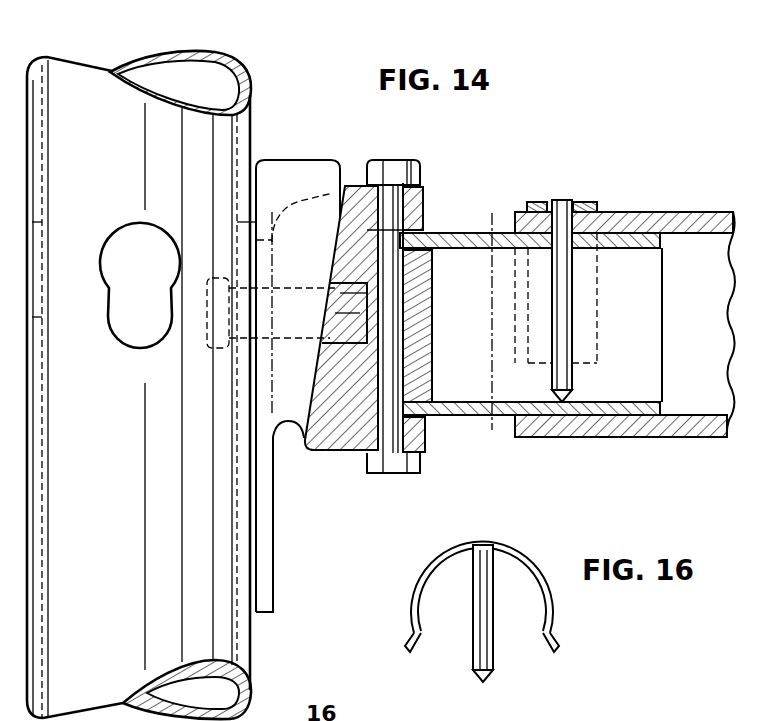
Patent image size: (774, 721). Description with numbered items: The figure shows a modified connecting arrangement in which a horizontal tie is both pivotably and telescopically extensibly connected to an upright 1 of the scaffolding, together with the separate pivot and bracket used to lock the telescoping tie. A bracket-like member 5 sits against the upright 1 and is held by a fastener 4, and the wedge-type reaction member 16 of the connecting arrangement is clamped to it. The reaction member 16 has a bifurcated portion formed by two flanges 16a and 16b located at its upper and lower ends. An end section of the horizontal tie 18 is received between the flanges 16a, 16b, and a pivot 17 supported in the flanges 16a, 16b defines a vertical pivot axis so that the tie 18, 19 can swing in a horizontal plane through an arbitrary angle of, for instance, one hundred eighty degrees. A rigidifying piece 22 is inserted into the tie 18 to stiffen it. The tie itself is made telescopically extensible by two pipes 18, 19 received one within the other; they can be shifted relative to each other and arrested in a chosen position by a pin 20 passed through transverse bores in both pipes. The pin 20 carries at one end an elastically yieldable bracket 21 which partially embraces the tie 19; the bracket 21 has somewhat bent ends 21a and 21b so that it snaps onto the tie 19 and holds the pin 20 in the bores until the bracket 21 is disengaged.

In FIG. 14, the tubular sign post 1 is at (64, 78).
In FIG. 14, the fastening bolt 4 is at (337, 307).
In FIG. 14, the post bracket member 5 is at (293, 160).
In FIG. 14, the reaction member 16 is at (327, 453).
In FIG. 14, the flange 16a is at (420, 200).
In FIG. 14, the flange 16b is at (425, 440).
In FIG. 14, the pivot 17 is at (404, 341).
In FIG. 14, the horizontal tie 18 is at (460, 410).
In FIG. 14, the tie 19 is at (637, 437).
In FIG. 14, the pin 20 is at (567, 322).
In FIG. 16, the pin 20 is at (488, 650).
In FIG. 14, the elastically yieldable bracket 21 is at (578, 204).
In FIG. 16, the elastically yieldable bracket 21 is at (515, 560).
In FIG. 16, the clip end 21a is at (415, 650).
In FIG. 16, the clip end 21b is at (558, 645).
In FIG. 14, the rigidifying piece 22 is at (420, 273).